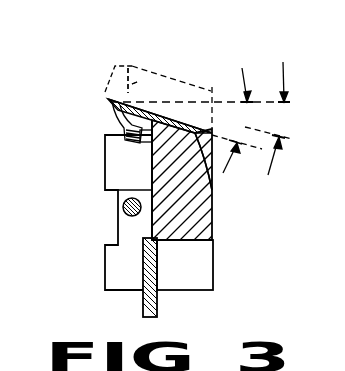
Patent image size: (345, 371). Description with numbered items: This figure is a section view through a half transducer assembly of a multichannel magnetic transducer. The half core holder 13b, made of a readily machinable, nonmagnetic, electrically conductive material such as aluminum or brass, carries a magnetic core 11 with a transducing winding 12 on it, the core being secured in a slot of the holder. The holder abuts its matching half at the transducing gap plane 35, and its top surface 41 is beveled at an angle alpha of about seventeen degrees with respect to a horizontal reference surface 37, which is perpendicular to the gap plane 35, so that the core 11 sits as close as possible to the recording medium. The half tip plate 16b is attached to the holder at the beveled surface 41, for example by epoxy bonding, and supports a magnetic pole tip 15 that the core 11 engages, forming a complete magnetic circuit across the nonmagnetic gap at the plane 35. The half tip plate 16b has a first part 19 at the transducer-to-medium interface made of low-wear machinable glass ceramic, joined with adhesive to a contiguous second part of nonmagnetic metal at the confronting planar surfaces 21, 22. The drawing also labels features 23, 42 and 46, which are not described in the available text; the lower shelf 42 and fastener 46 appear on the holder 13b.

The magnetic core 11 is at (134, 170).
The transducing winding 12 is at (122, 131).
The half core holder 13b is at (207, 218).
The magnetic pole tip 15 is at (110, 100).
The half tip plate 16b is at (182, 120).
The first part of tip plate 19 is at (128, 65).
The confronting planar surface 21 is at (137, 82).
The confronting planar surface 22 is at (137, 82).
The clamping surface 23 is at (212, 190).
The beveled top surface 41 is at (212, 190).
The transducing gap plane 35 is at (110, 100).
The horizontal reference surface 37 is at (288, 101).
The support block 42 is at (214, 262).
The screw 46 is at (123, 211).